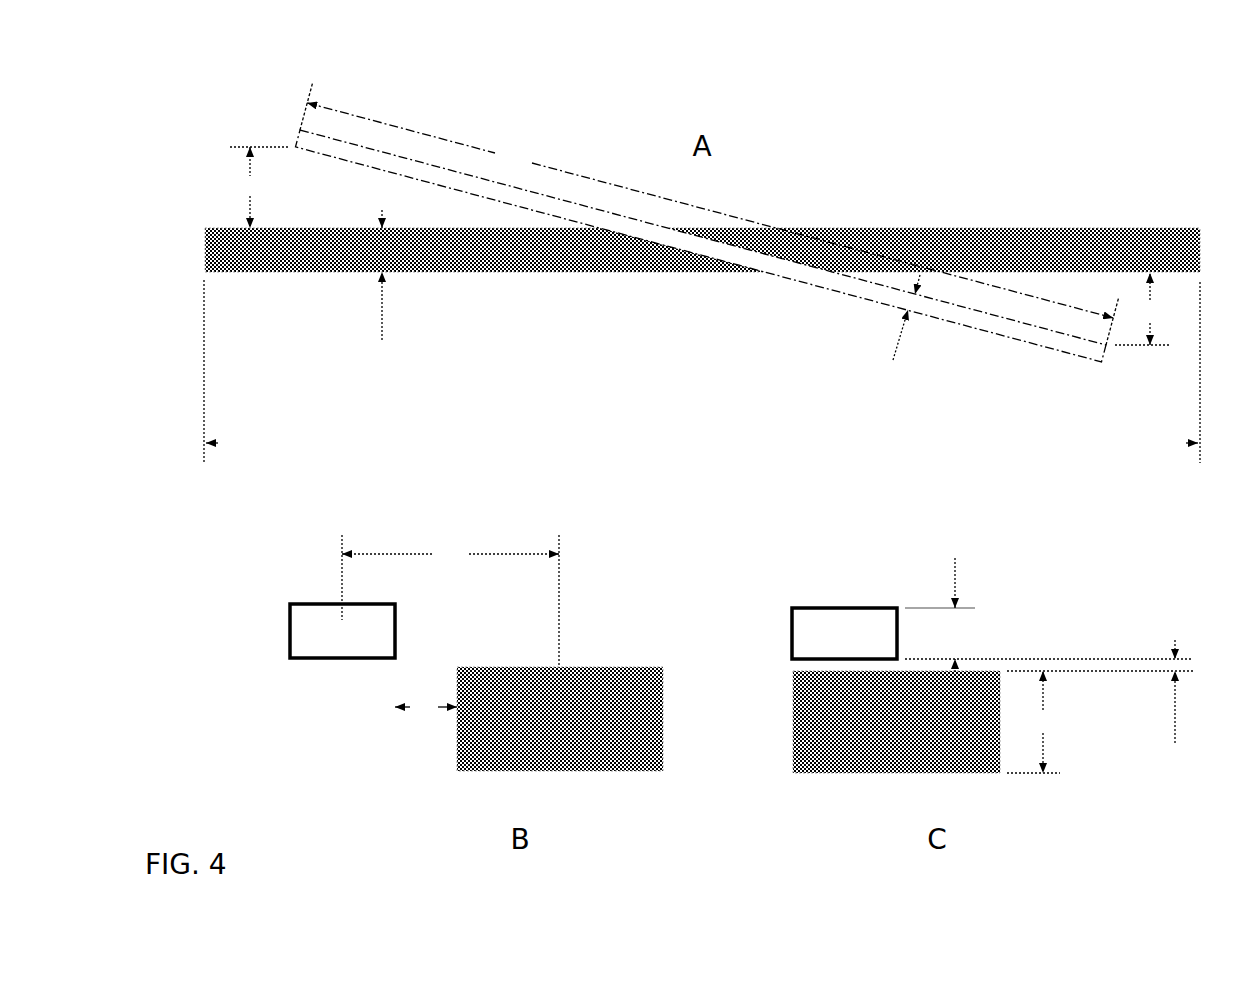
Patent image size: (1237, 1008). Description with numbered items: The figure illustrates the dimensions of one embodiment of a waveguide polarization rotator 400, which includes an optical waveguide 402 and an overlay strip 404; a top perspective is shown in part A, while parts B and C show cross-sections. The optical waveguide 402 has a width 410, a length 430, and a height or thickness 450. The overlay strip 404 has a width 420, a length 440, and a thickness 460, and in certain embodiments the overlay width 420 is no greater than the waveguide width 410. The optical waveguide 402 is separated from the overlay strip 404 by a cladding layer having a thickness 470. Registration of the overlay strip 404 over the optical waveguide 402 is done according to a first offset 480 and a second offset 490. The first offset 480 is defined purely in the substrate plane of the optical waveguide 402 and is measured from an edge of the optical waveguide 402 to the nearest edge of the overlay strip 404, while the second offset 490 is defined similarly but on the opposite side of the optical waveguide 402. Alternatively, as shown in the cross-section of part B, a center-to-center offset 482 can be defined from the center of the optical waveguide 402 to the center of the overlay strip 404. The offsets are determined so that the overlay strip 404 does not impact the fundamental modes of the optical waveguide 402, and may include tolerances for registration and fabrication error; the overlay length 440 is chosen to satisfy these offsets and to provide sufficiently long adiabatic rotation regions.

The waveguide polarization rotator 400 is at (1140, 132).
The optical waveguide 402 is at (207, 271).
The overlay strip 404 is at (1052, 348).
The waveguide width 410 is at (382, 288).
The overlay width 420 is at (896, 327).
The waveguide length 430 is at (702, 371).
The overlay length 440 is at (709, 214).
The waveguide thickness 450 is at (1100, 722).
The overlay thickness 460 is at (1049, 603).
The cladding layer thickness 470 is at (1175, 701).
The first offset 480 is at (343, 432).
The center-to-center offset 482 is at (450, 601).
The second offset 490 is at (1142, 309).